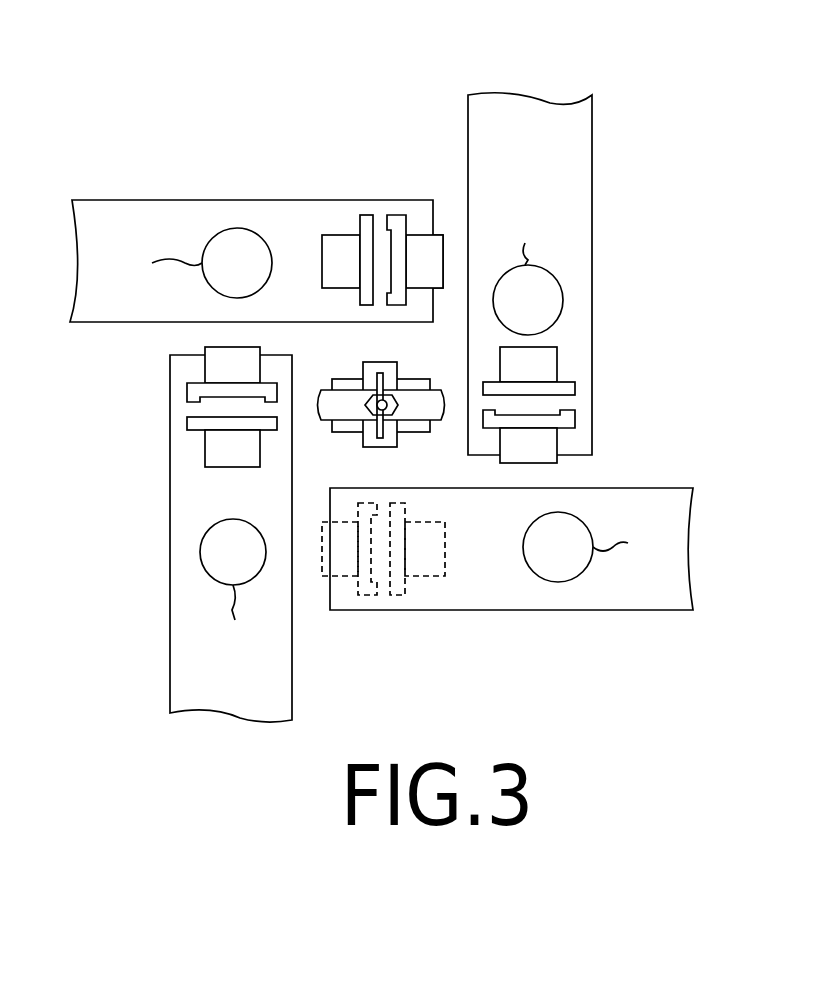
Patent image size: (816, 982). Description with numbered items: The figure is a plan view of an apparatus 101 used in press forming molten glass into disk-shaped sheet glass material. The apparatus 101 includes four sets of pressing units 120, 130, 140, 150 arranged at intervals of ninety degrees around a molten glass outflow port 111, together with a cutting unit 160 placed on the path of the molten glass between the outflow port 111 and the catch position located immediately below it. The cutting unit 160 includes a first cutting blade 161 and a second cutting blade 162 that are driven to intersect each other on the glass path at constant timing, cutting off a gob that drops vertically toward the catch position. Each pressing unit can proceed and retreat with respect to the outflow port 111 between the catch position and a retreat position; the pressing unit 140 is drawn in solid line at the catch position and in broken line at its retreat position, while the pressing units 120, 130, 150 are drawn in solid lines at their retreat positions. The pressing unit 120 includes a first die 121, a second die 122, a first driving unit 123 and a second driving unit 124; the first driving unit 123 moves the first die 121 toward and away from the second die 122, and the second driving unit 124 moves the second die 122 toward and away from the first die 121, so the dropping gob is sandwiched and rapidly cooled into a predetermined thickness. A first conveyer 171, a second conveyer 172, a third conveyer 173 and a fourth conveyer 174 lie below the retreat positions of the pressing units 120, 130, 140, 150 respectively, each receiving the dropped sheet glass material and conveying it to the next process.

The apparatus 101 is at (621, 65).
The molten glass outflow port 111 is at (388, 400).
The pressing unit 120 is at (373, 246).
The first die 121 is at (365, 306).
The second die 122 is at (398, 232).
The first driving unit 123 is at (337, 235).
The second driving unit 124 is at (435, 240).
The pressing unit 130 is at (188, 470).
The pressing unit 140 is at (441, 432).
The pressing unit 150 is at (568, 332).
The cutting unit 160 is at (355, 419).
The first cutting blade 161 is at (415, 421).
The second cutting blade 162 is at (350, 421).
The first conveyer 171 is at (118, 293).
The second conveyer 172 is at (190, 615).
The third conveyer 173 is at (660, 588).
The fourth conveyer 174 is at (563, 207).